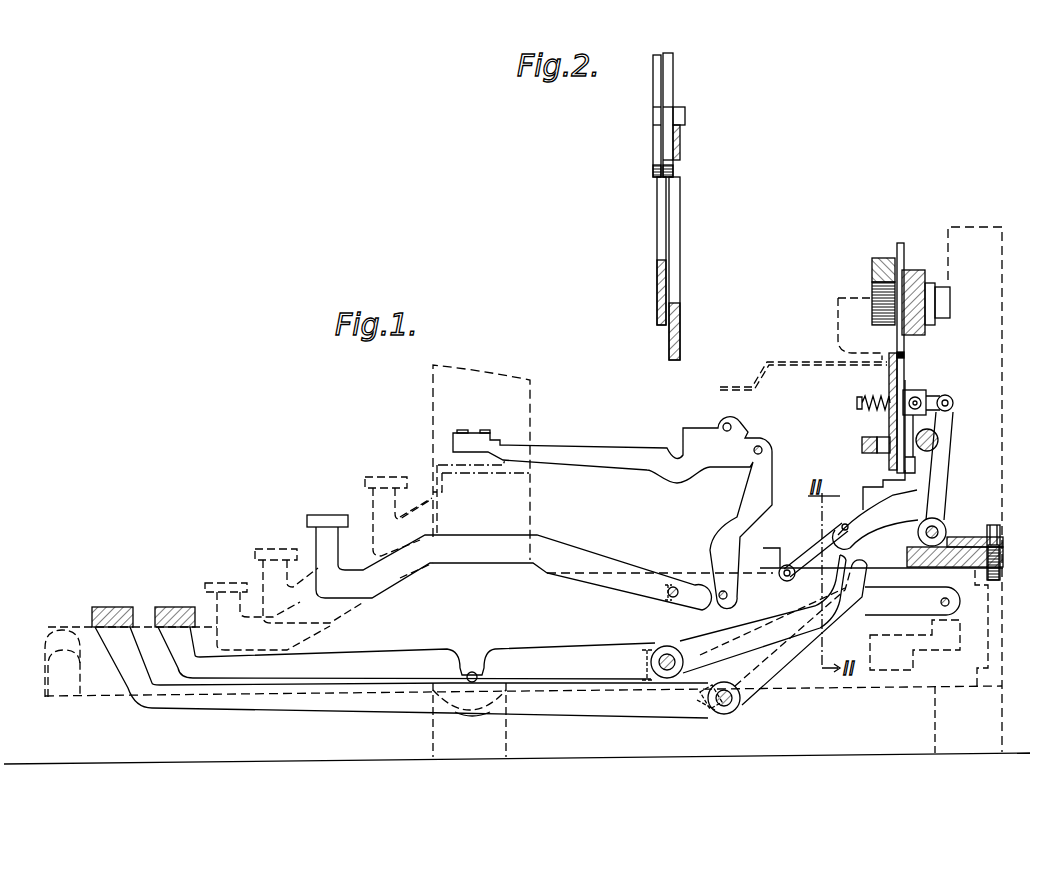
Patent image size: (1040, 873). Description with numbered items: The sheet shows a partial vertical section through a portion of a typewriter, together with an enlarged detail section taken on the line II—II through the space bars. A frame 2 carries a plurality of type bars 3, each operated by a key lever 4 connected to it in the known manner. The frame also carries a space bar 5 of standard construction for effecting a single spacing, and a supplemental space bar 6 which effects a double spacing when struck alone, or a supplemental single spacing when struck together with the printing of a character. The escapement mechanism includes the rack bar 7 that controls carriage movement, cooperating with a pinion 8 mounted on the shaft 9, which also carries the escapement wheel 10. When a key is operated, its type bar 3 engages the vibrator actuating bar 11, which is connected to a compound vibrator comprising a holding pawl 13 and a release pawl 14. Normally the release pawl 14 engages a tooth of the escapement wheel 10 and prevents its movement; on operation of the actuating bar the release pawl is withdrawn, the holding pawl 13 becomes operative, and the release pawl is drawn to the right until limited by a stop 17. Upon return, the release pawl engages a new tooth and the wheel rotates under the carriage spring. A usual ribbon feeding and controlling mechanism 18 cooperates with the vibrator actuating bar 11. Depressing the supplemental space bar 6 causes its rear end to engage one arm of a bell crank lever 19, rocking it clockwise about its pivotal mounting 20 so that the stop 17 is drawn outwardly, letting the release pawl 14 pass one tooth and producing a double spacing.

In FIG. 1, the frame 2 is at (527, 400).
In FIG. 1, the type bar 3 is at (612, 452).
In FIG. 1, the key lever 4 is at (606, 562).
In FIG. 2, the space bar 5 is at (680, 298).
In FIG. 1, the space bar 5 is at (113, 607).
In FIG. 2, the supplemental space bar 6 is at (657, 277).
In FIG. 1, the supplemental space bar 6 is at (176, 607).
In FIG. 1, the rack bar 7 is at (873, 258).
In FIG. 1, the pinion 8 is at (878, 282).
In FIG. 1, the shaft 9 is at (838, 298).
In FIG. 1, the escapement wheel 10 is at (900, 243).
In FIG. 1, the vibrator actuating bar 11 is at (780, 362).
In FIG. 1, the holding pawl 13 is at (889, 366).
In FIG. 1, the release pawl 14 is at (910, 357).
In FIG. 1, the stop 17 is at (928, 389).
In FIG. 2, the ribbon feeding and controlling mechanism 18 is at (673, 92).
In FIG. 1, the ribbon feeding and controlling mechanism 18 is at (848, 535).
In FIG. 2, the bell crank lever 19 is at (653, 100).
In FIG. 1, the bell crank lever 19 is at (946, 468).
In FIG. 1, the pivotal mounting 20 is at (942, 530).